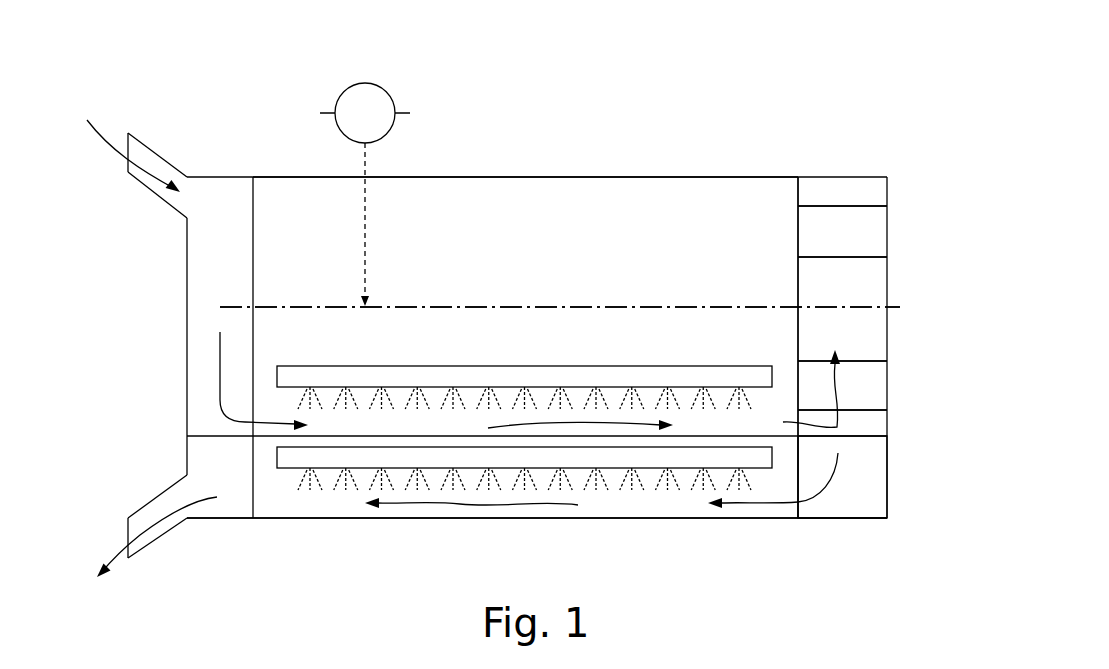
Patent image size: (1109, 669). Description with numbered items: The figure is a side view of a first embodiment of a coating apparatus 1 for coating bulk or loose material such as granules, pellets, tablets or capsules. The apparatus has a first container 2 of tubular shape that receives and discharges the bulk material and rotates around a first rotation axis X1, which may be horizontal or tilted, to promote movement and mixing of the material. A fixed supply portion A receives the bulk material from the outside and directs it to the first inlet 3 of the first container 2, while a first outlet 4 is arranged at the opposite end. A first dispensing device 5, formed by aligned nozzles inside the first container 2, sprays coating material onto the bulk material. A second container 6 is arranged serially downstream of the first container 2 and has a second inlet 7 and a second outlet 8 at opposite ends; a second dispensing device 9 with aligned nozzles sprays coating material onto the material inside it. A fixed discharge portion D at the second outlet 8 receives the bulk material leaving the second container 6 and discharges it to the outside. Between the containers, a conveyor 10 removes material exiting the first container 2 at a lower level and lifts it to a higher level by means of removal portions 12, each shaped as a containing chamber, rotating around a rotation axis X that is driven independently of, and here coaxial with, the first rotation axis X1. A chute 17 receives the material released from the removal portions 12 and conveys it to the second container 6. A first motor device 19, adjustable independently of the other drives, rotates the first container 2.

The coating apparatus 1 is at (283, 100).
The first container 2 is at (635, 195).
The first inlet 3 is at (220, 362).
The first outlet 4 is at (798, 288).
The first dispensing device 5 is at (680, 373).
The second container 6 is at (643, 500).
The second inlet 7 is at (798, 513).
The second outlet 8 is at (253, 500).
The second dispensing device 9 is at (288, 457).
The conveyor 10 is at (875, 285).
The removal portion 12 is at (875, 223).
The chute 17 is at (868, 470).
The first motor device 19 is at (383, 85).
The supply portion A is at (223, 193).
The discharge portion D is at (170, 495).
The rotation axis X is at (840, 310).
The first rotation axis X1 is at (525, 307).